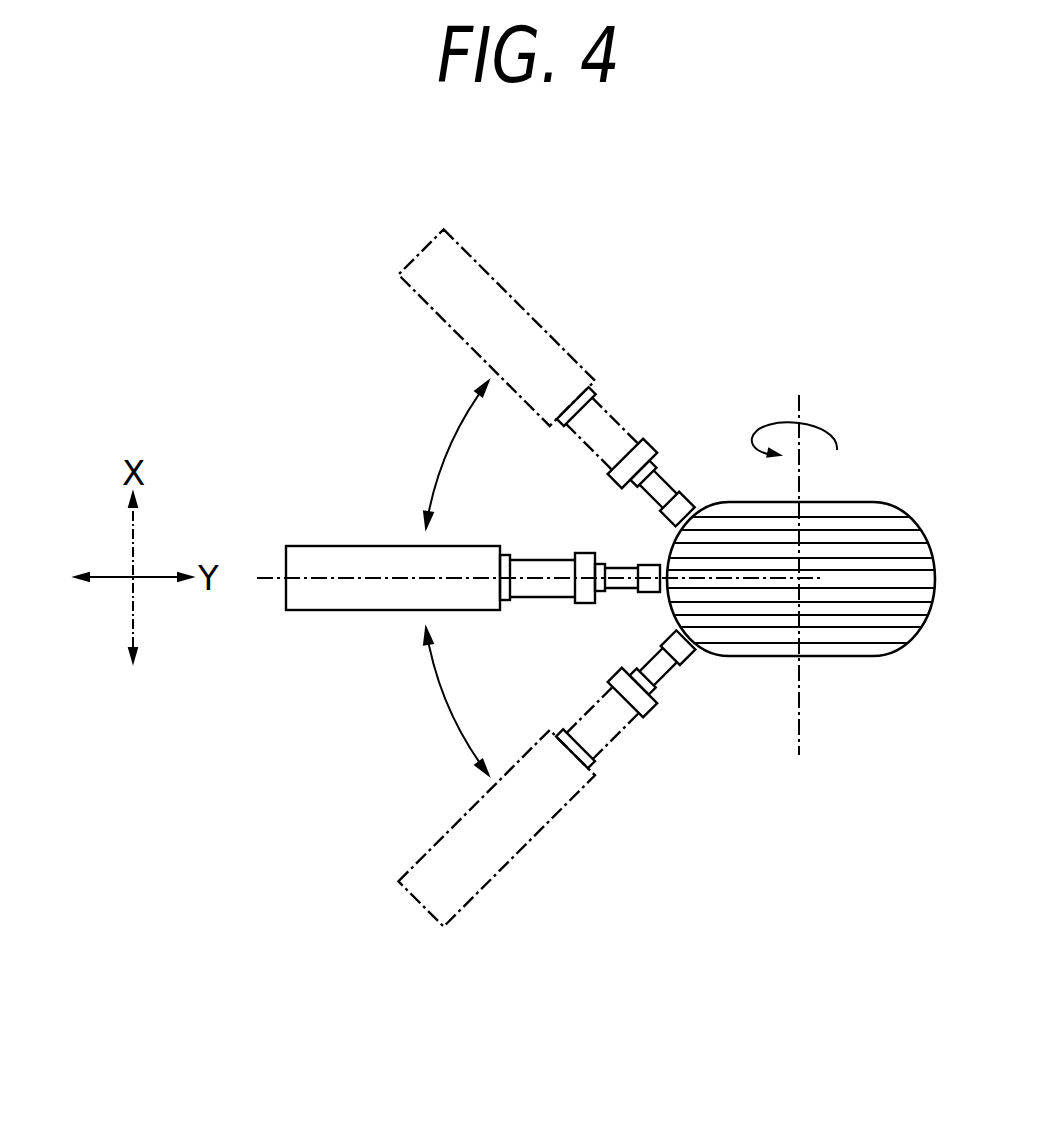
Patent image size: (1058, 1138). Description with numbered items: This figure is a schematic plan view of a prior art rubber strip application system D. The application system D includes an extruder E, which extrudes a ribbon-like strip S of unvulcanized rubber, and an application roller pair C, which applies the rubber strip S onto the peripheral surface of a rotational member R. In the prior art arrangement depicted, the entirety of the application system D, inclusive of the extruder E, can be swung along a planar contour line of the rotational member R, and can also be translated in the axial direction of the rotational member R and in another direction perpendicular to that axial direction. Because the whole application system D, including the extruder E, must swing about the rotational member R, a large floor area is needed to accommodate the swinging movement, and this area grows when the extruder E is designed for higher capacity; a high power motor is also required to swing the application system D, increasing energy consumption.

The extruder E is at (297, 548).
The application system D is at (540, 545).
The ribbon-like strip S is at (622, 566).
The application roller pair C is at (640, 592).
The rotational member R is at (835, 658).